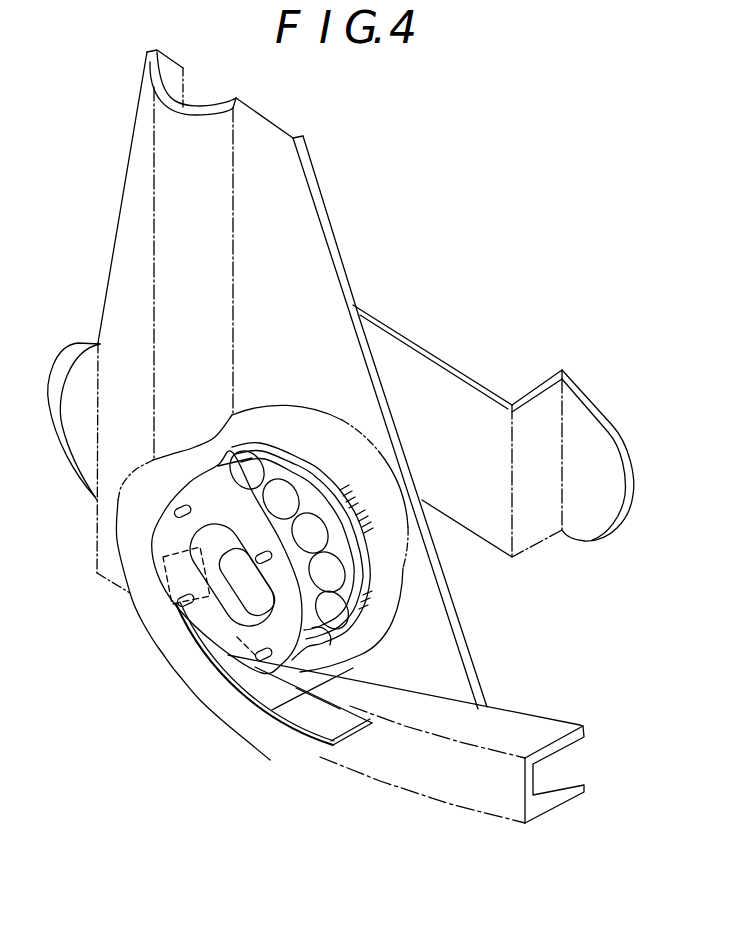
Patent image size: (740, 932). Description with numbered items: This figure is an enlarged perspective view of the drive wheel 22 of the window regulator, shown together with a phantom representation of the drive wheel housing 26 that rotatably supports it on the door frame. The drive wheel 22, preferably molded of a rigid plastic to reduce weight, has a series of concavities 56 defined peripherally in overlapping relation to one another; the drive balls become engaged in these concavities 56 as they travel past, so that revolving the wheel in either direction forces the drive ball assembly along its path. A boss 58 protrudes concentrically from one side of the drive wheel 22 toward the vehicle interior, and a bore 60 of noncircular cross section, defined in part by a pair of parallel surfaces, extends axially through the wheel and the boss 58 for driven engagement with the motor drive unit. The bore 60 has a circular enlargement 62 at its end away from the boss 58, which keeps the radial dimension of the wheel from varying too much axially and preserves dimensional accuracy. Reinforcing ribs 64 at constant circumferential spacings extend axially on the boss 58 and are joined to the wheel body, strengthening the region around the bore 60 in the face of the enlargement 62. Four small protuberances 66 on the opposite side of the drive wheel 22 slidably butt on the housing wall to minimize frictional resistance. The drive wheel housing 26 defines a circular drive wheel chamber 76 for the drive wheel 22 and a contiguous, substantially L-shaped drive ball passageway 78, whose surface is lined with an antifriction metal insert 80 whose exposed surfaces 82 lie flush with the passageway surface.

The drive wheel 22 is at (155, 531).
The drive wheel housing 26 is at (320, 192).
The concavities 56 is at (275, 477).
The boss 58 is at (358, 503).
The bore 60 is at (213, 607).
The circular enlargement 62 is at (233, 630).
The reinforcing ribs 64 is at (350, 490).
The small protuberances 66 is at (178, 505).
The drive wheel chamber 76 is at (386, 626).
The drive ball passageway 78 is at (547, 793).
The antifriction metal insert 80 is at (348, 746).
The exposed surfaces 82 is at (302, 716).